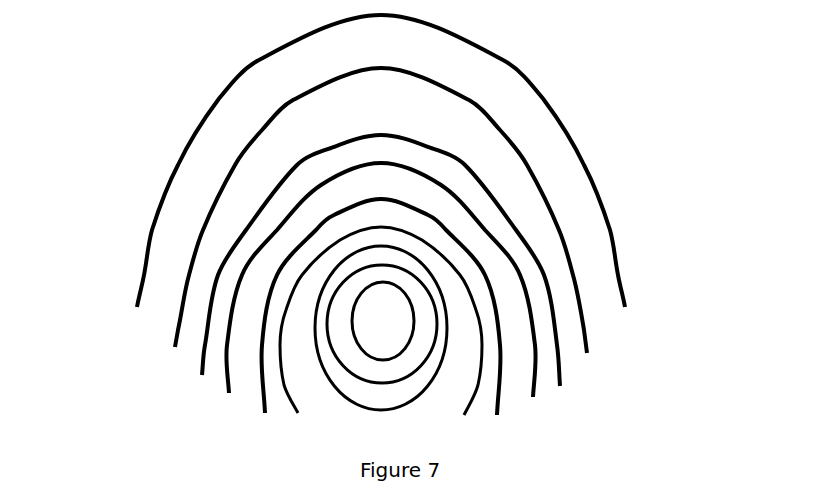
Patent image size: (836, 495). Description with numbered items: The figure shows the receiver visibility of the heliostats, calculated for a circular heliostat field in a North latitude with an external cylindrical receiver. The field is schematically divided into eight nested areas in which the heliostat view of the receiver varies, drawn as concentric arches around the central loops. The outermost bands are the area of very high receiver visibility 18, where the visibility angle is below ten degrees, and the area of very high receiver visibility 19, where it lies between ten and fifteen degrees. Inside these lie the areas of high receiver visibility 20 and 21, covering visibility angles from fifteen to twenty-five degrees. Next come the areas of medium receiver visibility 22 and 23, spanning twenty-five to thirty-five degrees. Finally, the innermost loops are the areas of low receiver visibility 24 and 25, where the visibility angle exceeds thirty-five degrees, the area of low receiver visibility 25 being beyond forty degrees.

The area of heliostat field with very high receiver visibility 18 is at (543, 148).
The area of heliostat field with very high receiver visibility 19 is at (222, 230).
The area of heliostat field with high receiver visibility 20 is at (505, 228).
The area of heliostat field with high receiver visibility 21 is at (258, 275).
The area of heliostat field with medium receiver visibility 22 is at (482, 283).
The area of heliostat field with medium receiver visibility 23 is at (300, 329).
The area of heliostat field with low receiver visibility 24 is at (438, 333).
The area of heliostat field with low receiver visibility 25 is at (365, 367).